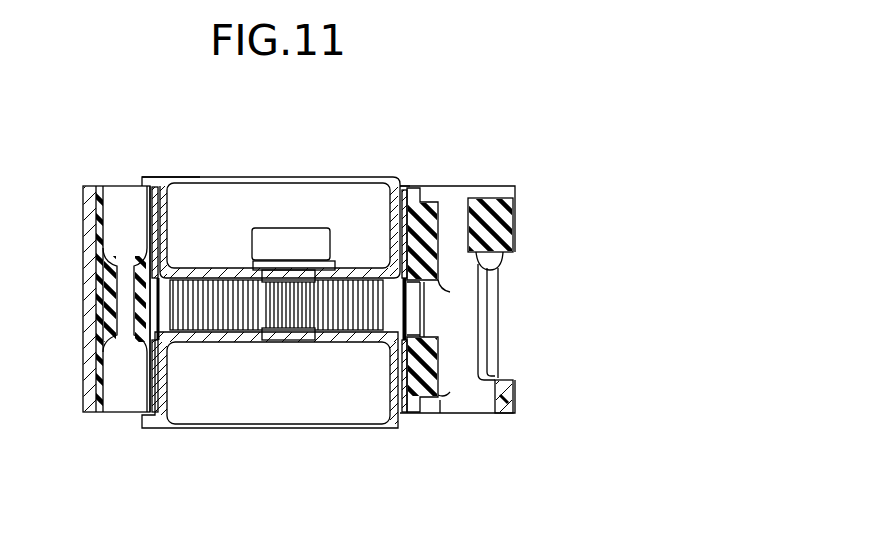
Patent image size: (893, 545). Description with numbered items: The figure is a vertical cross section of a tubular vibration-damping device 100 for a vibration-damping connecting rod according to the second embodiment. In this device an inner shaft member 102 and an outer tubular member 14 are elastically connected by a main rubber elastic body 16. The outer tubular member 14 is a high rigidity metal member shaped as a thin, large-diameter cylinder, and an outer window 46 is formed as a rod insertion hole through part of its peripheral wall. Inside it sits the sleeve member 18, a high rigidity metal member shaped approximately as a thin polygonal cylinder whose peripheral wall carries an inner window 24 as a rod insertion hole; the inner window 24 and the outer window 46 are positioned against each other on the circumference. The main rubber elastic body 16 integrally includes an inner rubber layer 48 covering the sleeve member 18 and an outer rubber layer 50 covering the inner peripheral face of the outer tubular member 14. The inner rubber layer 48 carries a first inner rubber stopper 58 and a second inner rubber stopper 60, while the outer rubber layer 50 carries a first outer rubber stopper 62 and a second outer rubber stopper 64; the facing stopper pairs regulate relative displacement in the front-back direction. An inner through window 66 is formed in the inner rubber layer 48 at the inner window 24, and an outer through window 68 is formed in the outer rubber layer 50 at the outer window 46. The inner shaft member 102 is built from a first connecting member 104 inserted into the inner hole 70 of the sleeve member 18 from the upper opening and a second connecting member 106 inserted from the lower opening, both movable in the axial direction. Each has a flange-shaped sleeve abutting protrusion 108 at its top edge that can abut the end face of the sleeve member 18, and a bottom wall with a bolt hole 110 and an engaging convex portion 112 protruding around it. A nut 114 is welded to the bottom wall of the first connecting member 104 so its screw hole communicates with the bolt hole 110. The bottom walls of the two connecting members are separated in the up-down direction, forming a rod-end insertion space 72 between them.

The outer tubular member 14 is at (81, 215).
The main rubber elastic body 16 is at (449, 384).
The sleeve member 18 is at (152, 392).
The inner window 24 is at (421, 325).
The outer window 46 is at (504, 378).
The inner rubber layer 48 is at (407, 400).
The outer rubber layer 50 is at (499, 397).
The first inner rubber stopper 58 is at (146, 330).
The second inner rubber stopper 60 is at (426, 236).
The first outer rubber stopper 62 is at (106, 281).
The second outer rubber stopper 64 is at (488, 212).
The inner through window 66 is at (426, 290).
The outer through window 68 is at (484, 263).
The inner hole 70 is at (403, 383).
The rod-end insertion space 72 is at (396, 307).
The tubular vibration-damping device 100 is at (491, 124).
The inner shaft member 102 is at (181, 167).
The first connecting member 104 is at (357, 175).
The second connecting member 106 is at (210, 430).
The sleeve abutting protrusion 108 is at (153, 415).
The bolt hole 110 is at (278, 270).
The engaging convex portion 112 is at (267, 279).
The nut 114 is at (305, 248).